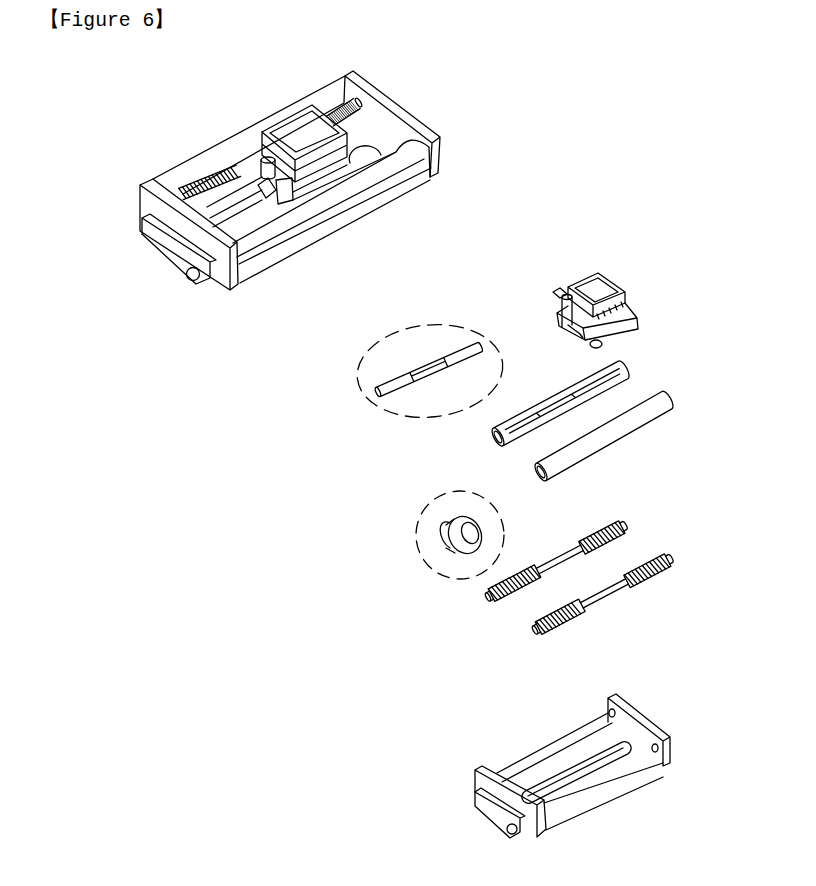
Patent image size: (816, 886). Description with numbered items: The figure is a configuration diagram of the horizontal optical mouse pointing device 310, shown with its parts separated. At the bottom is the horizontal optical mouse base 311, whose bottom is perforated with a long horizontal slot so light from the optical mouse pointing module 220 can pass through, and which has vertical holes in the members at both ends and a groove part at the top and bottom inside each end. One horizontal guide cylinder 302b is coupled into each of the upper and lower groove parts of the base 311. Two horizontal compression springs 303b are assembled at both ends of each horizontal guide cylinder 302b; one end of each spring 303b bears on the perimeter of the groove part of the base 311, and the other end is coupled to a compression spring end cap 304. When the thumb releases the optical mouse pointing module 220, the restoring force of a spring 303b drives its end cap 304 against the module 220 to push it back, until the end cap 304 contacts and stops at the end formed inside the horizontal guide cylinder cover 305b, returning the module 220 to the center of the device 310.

The horizontal optical mouse pointing device 310 is at (104, 111).
The optical mouse pointing module 220 is at (632, 292).
The horizontal guide cylinder cover 305b is at (537, 463).
The horizontal guide cylinder 302b is at (536, 630).
The compression spring end cap 304 is at (537, 568).
The horizontal compression spring 303b is at (666, 561).
The horizontal optical mouse base 311 is at (616, 780).